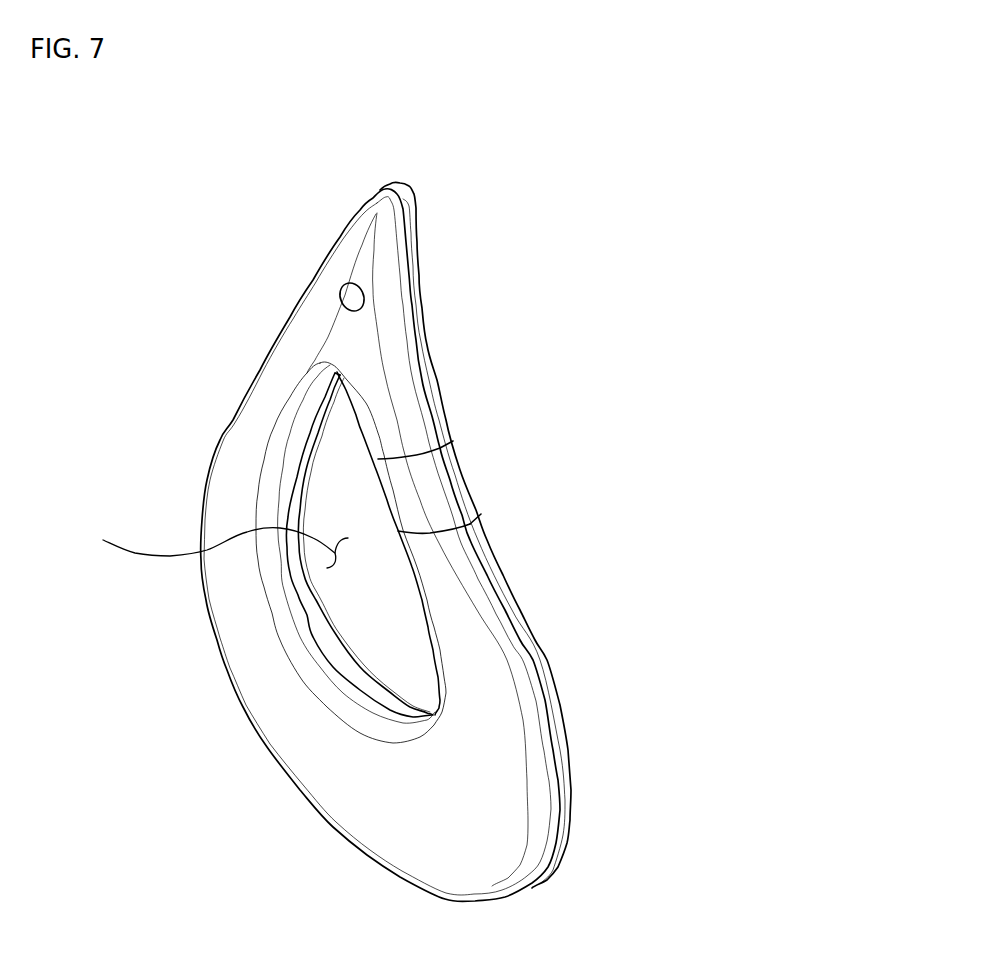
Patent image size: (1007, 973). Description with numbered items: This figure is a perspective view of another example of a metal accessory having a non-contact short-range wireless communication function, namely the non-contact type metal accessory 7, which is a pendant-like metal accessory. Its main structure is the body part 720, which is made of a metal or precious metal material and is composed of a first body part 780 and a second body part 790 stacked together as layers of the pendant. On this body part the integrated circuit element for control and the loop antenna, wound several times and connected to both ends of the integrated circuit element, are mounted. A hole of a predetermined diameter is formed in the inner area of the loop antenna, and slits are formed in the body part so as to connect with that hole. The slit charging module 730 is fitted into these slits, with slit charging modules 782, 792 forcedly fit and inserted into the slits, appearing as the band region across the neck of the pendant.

The non-contact type metal accessory 7 is at (513, 193).
The body part 720 is at (745, 695).
The first body part 780 is at (532, 733).
The second body part 790 is at (557, 696).
The slit charging module 730 is at (630, 448).
The slit charging module 782 is at (432, 500).
The slit charging module 792 is at (458, 459).